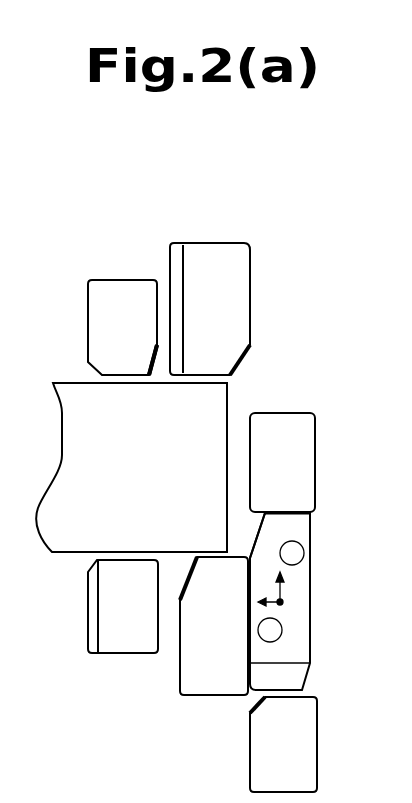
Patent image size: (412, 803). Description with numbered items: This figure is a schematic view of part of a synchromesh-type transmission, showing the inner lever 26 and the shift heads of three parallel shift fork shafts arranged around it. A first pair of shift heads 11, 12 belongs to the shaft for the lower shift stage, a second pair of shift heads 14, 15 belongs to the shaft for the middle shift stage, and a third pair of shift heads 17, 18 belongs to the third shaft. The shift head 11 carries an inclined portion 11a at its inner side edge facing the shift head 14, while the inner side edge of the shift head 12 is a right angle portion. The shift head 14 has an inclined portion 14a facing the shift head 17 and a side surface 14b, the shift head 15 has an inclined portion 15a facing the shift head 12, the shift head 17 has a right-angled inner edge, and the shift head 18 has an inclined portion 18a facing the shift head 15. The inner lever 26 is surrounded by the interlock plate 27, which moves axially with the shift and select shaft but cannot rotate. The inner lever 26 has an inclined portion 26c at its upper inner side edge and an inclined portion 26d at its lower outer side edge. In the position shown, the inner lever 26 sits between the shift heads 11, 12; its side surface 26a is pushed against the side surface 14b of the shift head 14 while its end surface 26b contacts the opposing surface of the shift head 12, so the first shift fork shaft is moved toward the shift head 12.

The shift head 11 is at (305, 757).
The inclined portion 11a is at (253, 703).
The shift head 12 is at (305, 451).
The shift head 14 is at (235, 639).
The inclined portion 14a is at (187, 577).
The side surface 14b is at (250, 655).
The shift head 15 is at (232, 285).
The inclined portion 15a is at (240, 366).
The shift head 17 is at (115, 647).
The shift head 18 is at (121, 292).
The inclined portion 18a is at (156, 360).
The inner lever 26 is at (298, 612).
The side surface 26a is at (245, 663).
The end surface 26b is at (289, 510).
The inclined portion 26c is at (254, 536).
The inclined portion 26d is at (303, 682).
The interlock plate 27 is at (143, 485).